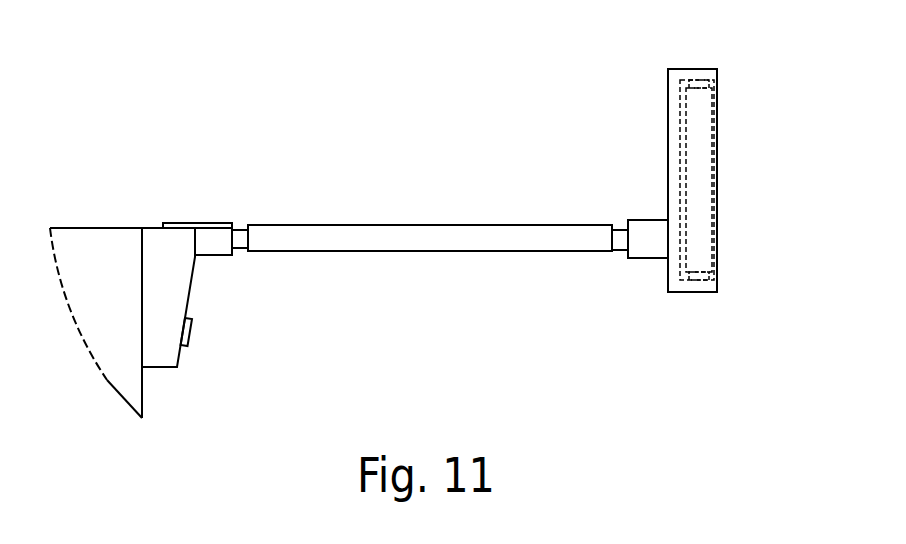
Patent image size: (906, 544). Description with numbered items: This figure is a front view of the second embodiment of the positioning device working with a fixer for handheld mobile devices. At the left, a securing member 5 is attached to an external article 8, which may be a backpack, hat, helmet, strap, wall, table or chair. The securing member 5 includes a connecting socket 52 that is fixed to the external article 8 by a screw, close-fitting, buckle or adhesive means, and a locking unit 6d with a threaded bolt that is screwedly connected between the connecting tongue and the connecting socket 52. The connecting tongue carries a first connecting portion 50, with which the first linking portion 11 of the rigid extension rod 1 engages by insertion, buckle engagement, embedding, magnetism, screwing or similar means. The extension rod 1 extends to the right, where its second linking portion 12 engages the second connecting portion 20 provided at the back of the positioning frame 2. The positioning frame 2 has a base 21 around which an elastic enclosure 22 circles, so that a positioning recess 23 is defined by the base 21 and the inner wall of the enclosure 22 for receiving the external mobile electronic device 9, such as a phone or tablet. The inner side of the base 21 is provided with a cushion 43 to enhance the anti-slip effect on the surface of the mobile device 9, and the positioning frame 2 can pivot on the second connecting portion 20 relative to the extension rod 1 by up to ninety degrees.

The extension rod 1 is at (424, 221).
The positioning frame 2 is at (677, 304).
The securing member 5 is at (191, 202).
The locking unit 6d is at (194, 341).
The external article 8 is at (107, 242).
The external mobile electronic device 9 is at (717, 257).
The first linking portion 11 is at (237, 235).
The second linking portion 12 is at (623, 242).
The second connecting portion 20 is at (645, 225).
The base 21 is at (670, 147).
The elastic enclosure 22 is at (698, 73).
The positioning recess 23 is at (715, 90).
The cushion 43 is at (690, 82).
The first connecting portion 50 is at (215, 248).
The connecting socket 52 is at (182, 272).